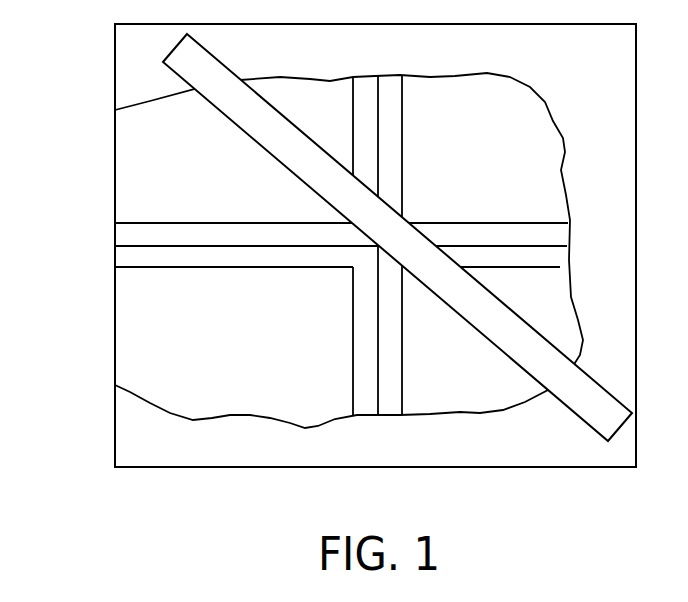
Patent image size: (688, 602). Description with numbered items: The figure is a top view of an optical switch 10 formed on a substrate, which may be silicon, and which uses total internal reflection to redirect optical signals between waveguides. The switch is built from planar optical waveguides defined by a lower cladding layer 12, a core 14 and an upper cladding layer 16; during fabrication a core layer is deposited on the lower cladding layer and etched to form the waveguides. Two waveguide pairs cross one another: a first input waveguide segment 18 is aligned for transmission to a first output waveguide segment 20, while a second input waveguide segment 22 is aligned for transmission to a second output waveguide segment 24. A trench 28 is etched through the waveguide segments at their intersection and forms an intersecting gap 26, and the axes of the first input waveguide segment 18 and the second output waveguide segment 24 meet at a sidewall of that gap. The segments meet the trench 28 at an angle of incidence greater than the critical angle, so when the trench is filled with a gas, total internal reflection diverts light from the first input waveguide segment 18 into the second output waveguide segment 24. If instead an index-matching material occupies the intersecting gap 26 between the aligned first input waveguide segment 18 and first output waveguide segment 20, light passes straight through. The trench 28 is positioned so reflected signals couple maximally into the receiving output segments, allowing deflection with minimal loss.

The optical switch 10 is at (340, 245).
The lower cladding layer 12 is at (130, 366).
The core 14 is at (167, 280).
The upper cladding layer 16 is at (132, 435).
The first input waveguide segment 18 is at (205, 228).
The first output waveguide segment 20 is at (518, 233).
The second input waveguide segment 22 is at (392, 166).
The second output waveguide segment 24 is at (365, 312).
The intersecting gap 26 is at (392, 235).
The trench 28 is at (220, 74).